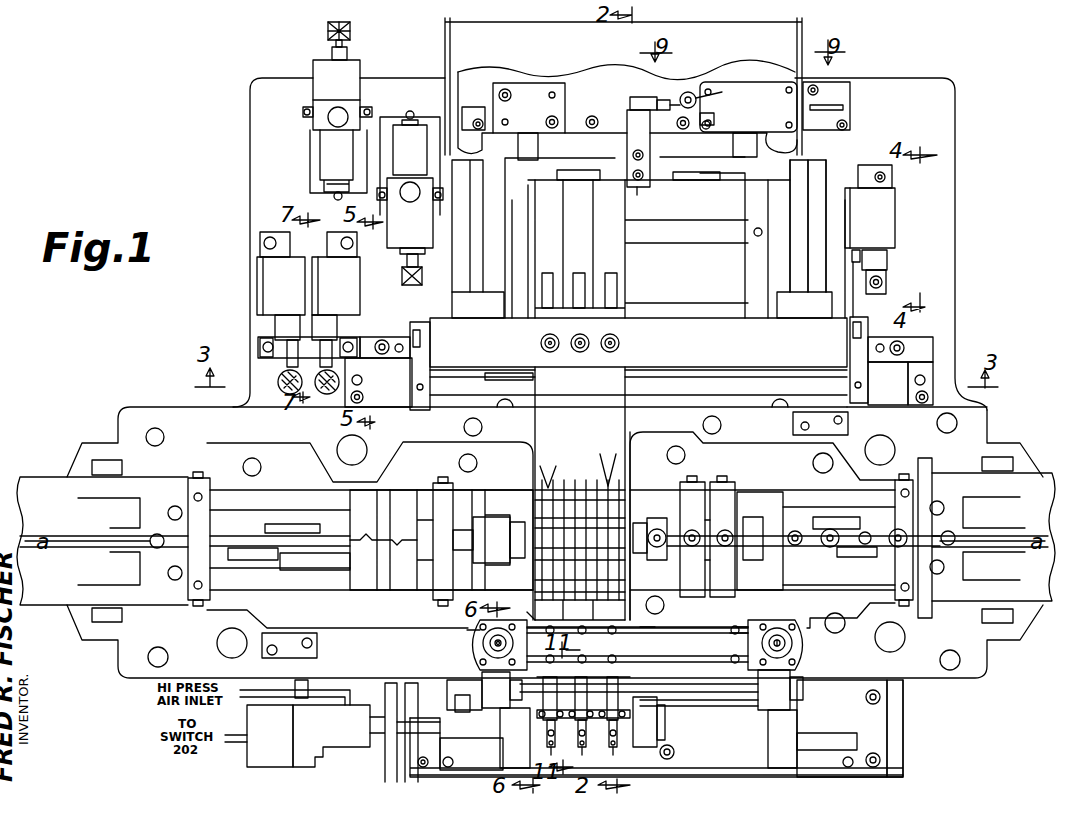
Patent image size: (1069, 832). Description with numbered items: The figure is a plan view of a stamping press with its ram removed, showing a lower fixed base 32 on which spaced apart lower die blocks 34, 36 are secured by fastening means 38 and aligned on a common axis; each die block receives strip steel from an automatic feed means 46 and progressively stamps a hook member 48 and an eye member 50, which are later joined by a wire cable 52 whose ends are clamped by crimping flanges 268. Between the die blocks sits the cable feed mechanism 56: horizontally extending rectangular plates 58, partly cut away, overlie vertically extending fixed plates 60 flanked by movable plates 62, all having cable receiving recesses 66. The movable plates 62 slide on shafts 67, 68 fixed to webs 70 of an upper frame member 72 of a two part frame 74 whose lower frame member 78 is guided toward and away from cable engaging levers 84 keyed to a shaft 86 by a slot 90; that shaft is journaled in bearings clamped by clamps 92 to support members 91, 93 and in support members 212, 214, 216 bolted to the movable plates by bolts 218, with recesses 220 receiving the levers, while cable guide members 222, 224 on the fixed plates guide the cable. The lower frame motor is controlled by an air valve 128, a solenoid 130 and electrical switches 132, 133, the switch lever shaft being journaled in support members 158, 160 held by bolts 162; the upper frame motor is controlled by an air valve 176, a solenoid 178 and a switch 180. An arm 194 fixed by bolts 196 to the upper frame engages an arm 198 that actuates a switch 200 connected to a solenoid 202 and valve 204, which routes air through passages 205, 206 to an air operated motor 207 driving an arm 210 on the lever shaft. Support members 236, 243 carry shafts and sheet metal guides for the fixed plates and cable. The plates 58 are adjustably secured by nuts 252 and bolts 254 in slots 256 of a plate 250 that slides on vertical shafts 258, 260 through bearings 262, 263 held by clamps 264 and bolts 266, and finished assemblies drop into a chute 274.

The lower fixed base 32 is at (950, 246).
The lower die block 34 is at (400, 500).
The lower die block 36 is at (760, 500).
The fastening means 38 is at (463, 456).
The automatic feed means 46 is at (33, 490).
The hook member 48 is at (495, 532).
The eye member 50 is at (653, 532).
The wire cable 52 is at (582, 490).
The cable feed mechanism 56 is at (676, 745).
The rectangular plates 58 is at (543, 254).
The fixed plates 60 is at (553, 588).
The movable plates 62 is at (583, 460).
The cable receiving recesses 66 is at (640, 497).
The shaft 67 is at (657, 316).
The shaft 68 is at (722, 235).
The webs 70 is at (513, 194).
The upper frame member 72 is at (676, 186).
The two part frame or carriage 74 is at (836, 158).
The lower frame member 78 is at (570, 167).
The cable engaging levers 84 is at (612, 683).
The shaft 86 is at (701, 696).
The slot 90 is at (710, 690).
The support member 91 is at (798, 703).
The clamps 92 is at (770, 702).
The support member 93 is at (456, 746).
The air valve 128 is at (425, 239).
The solenoid 130 is at (420, 164).
The electrical switch 132 is at (885, 226).
The electrical switch 133 is at (350, 297).
The support member 158 is at (897, 372).
The support member 160 is at (397, 374).
The bolts 162 is at (382, 340).
The air valve 176 is at (352, 96).
The solenoid 178 is at (342, 162).
The electrical switch 180 is at (297, 297).
The arm 194 is at (630, 112).
The bolts 196 is at (638, 183).
The arm 198 is at (691, 95).
The electrical switch 200 is at (768, 112).
The solenoid 202 is at (288, 746).
The valve 204 is at (345, 746).
The passage 205 is at (410, 707).
The passage 206 is at (383, 743).
The air operated motor 207 is at (440, 735).
The arm 210 is at (452, 712).
The support member 212 is at (562, 675).
The support member 214 is at (600, 672).
The support member 216 is at (634, 672).
The bolts 218 is at (658, 714).
The recesses 220 is at (553, 756).
The cable guide member 222 is at (582, 748).
The cable guide member 224 is at (630, 747).
The support members 236 is at (503, 762).
The support member 243 is at (663, 770).
The plate 250 is at (734, 632).
The nuts 252 is at (531, 623).
The bolts 254 is at (641, 627).
The slots 256 is at (740, 627).
The shaft 258 is at (488, 640).
The shaft 260 is at (762, 644).
The bearing 262 is at (467, 630).
The bearing 263 is at (770, 644).
The clamps 264 is at (493, 643).
The bolts 266 is at (472, 660).
The flanges 268 is at (528, 526).
The chute 274 is at (506, 32).